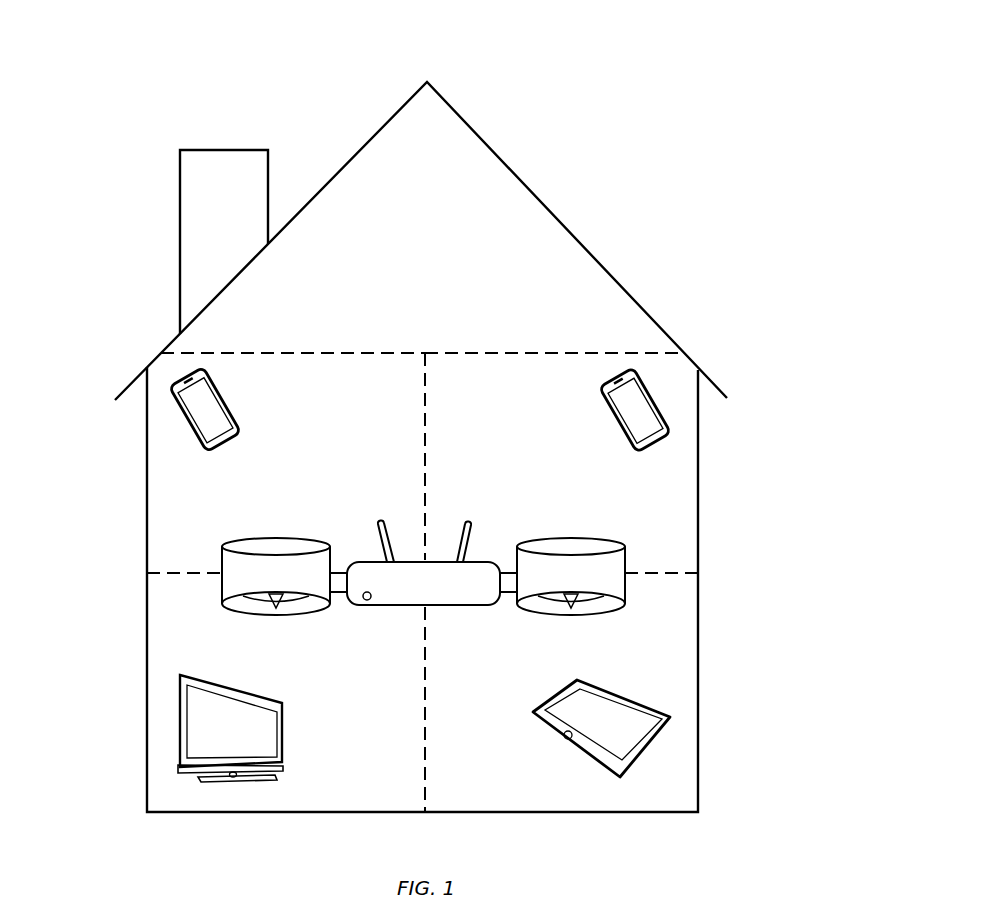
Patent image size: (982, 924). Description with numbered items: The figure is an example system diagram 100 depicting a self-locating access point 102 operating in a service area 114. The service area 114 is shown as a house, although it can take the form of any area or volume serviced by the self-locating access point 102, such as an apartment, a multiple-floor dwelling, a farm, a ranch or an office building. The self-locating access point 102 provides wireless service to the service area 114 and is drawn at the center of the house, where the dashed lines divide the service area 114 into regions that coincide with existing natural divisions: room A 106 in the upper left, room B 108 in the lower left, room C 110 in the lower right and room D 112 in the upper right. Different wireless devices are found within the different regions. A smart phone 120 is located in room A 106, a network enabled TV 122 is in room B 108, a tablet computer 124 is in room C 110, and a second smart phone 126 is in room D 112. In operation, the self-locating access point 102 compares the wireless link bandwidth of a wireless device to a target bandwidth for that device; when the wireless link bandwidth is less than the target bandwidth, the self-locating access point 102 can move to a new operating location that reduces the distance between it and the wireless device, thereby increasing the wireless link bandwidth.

The system diagram 100 is at (597, 90).
The self-locating access point 102 is at (607, 541).
The room A 106 is at (147, 464).
The room B 108 is at (147, 708).
The room C 110 is at (699, 670).
The room D 112 is at (699, 450).
The service area 114 is at (617, 279).
The smart phone 120 is at (241, 431).
The network enabled TV 122 is at (283, 704).
The tablet computer 124 is at (533, 716).
The second smart phone 126 is at (599, 391).